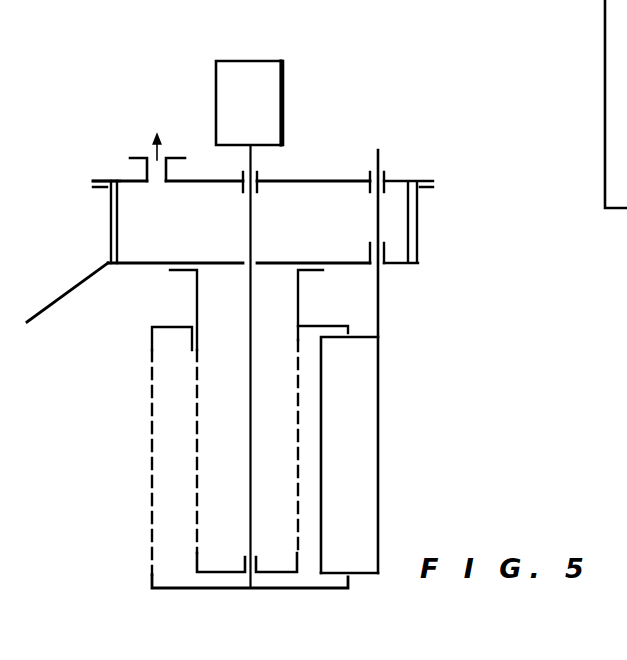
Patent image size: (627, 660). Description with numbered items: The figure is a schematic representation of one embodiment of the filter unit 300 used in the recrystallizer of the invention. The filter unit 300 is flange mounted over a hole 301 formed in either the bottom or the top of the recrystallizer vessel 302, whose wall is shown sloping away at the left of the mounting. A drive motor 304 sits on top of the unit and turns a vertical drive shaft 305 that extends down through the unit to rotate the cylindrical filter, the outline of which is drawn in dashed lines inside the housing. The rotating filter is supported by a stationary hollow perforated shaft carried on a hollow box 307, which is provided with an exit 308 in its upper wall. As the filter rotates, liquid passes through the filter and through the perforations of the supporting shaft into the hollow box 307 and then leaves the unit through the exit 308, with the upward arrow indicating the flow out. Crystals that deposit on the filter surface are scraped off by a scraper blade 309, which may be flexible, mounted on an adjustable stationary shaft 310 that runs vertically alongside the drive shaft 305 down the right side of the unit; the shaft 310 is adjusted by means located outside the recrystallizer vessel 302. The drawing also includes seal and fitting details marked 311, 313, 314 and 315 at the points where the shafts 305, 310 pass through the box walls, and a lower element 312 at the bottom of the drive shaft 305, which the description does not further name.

The filter unit 300 is at (152, 445).
The hole 301 is at (110, 228).
The recrystallizer vessel 302 is at (84, 283).
The drive motor 304 is at (283, 58).
The drive shaft 305 is at (252, 229).
The hollow box 307 is at (108, 180).
The exit 308 is at (160, 166).
The scraper blade 309 is at (357, 420).
The adjustable stationary shaft 310 is at (380, 160).
The shaft seal 311 is at (258, 182).
The impeller 312 is at (240, 562).
The draft tube collar 313 is at (301, 345).
The lower tube seal 314 is at (380, 268).
The side flange 315 is at (384, 176).